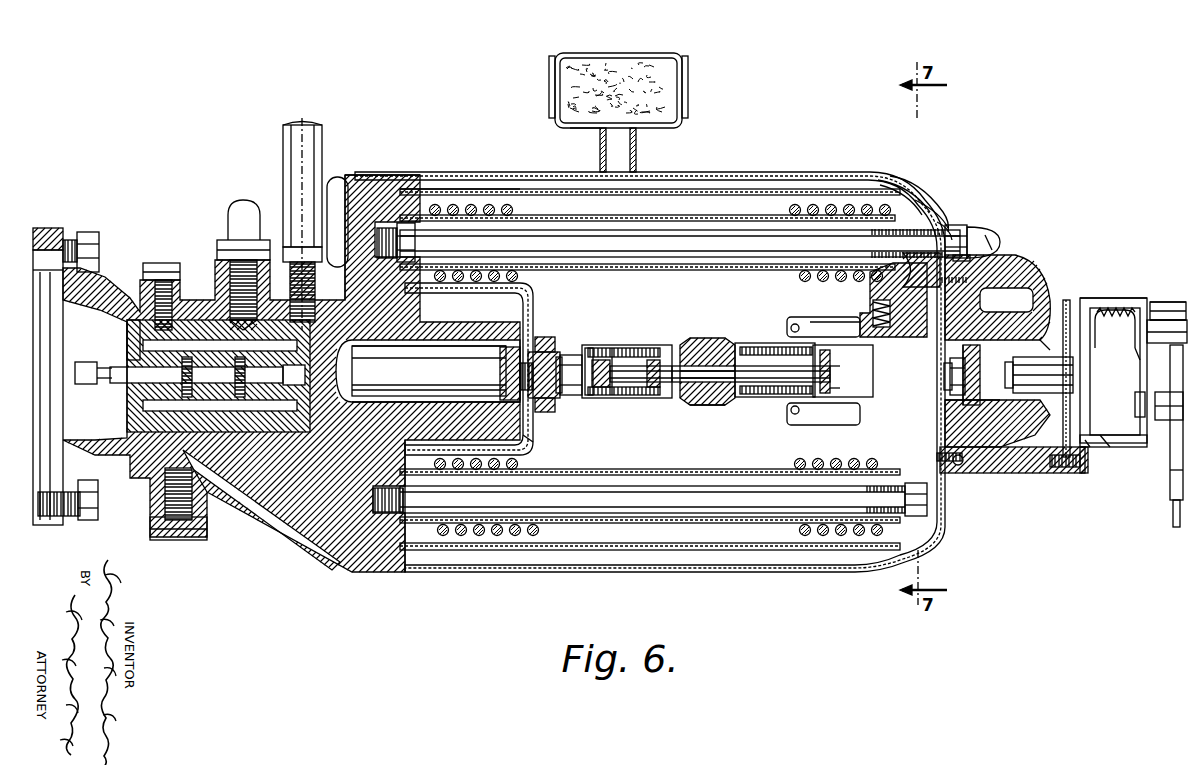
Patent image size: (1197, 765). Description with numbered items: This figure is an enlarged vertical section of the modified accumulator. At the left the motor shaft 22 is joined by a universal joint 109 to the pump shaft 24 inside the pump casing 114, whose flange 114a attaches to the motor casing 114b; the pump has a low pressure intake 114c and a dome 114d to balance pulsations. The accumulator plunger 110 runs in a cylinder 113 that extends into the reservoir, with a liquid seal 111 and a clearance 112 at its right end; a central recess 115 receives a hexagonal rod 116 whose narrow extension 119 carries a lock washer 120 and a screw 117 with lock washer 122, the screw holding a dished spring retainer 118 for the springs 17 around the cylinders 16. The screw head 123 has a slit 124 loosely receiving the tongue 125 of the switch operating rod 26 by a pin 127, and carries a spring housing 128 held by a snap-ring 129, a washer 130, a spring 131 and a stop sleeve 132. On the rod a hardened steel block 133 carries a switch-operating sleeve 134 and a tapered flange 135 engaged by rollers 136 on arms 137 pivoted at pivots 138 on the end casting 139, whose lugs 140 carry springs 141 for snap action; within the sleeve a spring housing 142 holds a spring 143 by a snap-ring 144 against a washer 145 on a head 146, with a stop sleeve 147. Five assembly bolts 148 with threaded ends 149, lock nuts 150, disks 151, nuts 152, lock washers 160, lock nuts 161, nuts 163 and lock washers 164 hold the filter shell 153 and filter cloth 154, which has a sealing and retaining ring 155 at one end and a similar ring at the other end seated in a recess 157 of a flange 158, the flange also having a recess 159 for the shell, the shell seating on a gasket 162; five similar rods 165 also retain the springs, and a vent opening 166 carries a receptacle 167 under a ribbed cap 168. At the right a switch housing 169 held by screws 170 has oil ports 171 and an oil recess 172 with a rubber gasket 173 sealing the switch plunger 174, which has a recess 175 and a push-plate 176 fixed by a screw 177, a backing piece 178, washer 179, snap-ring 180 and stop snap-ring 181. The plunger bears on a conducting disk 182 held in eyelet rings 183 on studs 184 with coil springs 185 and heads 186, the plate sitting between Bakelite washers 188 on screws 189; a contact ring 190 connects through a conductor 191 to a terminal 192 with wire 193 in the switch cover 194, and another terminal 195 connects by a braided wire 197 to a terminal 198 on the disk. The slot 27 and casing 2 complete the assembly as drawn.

The casing 2 is at (737, 172).
The cylinders 16 is at (645, 230).
The accumulator compression springs 17 is at (497, 206).
The motor shaft 22 is at (110, 380).
The pump shaft 24 is at (157, 345).
The switch operating rod 26 is at (240, 368).
The slot 27 is at (262, 500).
The universal joint 109 is at (165, 370).
The accumulator plunger 110 is at (291, 373).
The liquid seal 111 is at (383, 506).
The clearance 112 is at (416, 342).
The cylinder 113 is at (417, 402).
The pump casing 114 is at (252, 496).
The flange 114a is at (86, 233).
The motor casing 114b is at (48, 230).
The low pressure intake 114c is at (160, 472).
The dome 114d is at (240, 212).
The central recess 115 is at (458, 350).
The hexagonal rod 116 is at (462, 378).
The screw 117 is at (550, 345).
The dished spring retainer 118 is at (535, 292).
The narrow extension 119 is at (530, 430).
The lock washer 120 is at (545, 352).
The lock washer 122 is at (559, 394).
The head 123 is at (585, 350).
The central slit 124 is at (576, 396).
The tongue 125 is at (606, 373).
The pin 127 is at (612, 350).
The spring housing 128 is at (630, 399).
The snap-ring 129 is at (620, 352).
The washer 130 is at (602, 388).
The spring 131 is at (653, 388).
The stop sleeve 132 is at (690, 375).
The hardened steel block 133 is at (698, 340).
The switch-operating sleeve 134 is at (750, 345).
The tapered annular flange 135 is at (700, 405).
The rollers 136 is at (790, 320).
The arms 137 is at (822, 320).
The pivots 138 is at (875, 360).
The end casting 139 is at (950, 226).
The lugs 140 is at (868, 296).
The springs 141 is at (873, 313).
The spring housing 142 is at (830, 356).
The spring 143 is at (778, 406).
The snap-ring 144 is at (830, 390).
The spring retaining washer 145 is at (820, 360).
The head 146 is at (830, 372).
The stop sleeve 147 is at (775, 358).
The assembly bolts 148 is at (773, 210).
The screw-threaded ends 149 is at (393, 240).
The lock nuts 150 is at (369, 237).
The spring-retaining disks 151 is at (902, 190).
The nuts 152 is at (925, 212).
The filter-supporting perforated shell 153 is at (926, 190).
The filter cloth 154 is at (887, 181).
The sealing and retaining ring 155 is at (940, 204).
The recess 157 is at (340, 200).
The flange 158 is at (420, 192).
The recess 159 is at (462, 217).
The lock washers 160 is at (958, 235).
The lock nuts 161 is at (988, 246).
The gasket 162 is at (378, 178).
The nuts 163 is at (995, 240).
The lock washers 164 is at (970, 258).
The screw-threaded rods 165 is at (722, 500).
The vent opening 166 is at (636, 152).
The vented receptacle 167 is at (591, 129).
The ribbed cap 168 is at (620, 56).
The switch housing 169 is at (990, 473).
The screws 170 is at (932, 286).
The oil ports 171 is at (968, 340).
The oil recess 172 is at (990, 320).
The rubber gasket 173 is at (1000, 420).
The switch plunger 174 is at (1073, 378).
The annular oil-carrying recess 175 is at (975, 422).
The push-plate 176 is at (963, 400).
The screw 177 is at (948, 377).
The backing piece 178 is at (1030, 335).
The washer 179 is at (1040, 473).
The snap-ring 180 is at (1064, 405).
The stop snap-ring 181 is at (1040, 374).
The conducting disk 182 is at (1090, 448).
The eyelet shaped rings 183 is at (1108, 298).
The studs 184 is at (1118, 300).
The coil springs 185 is at (1136, 304).
The heads 186 is at (1115, 328).
The Bakelite washers 188 is at (1083, 298).
The screws 189 is at (1083, 475).
The contact ring 190 is at (1082, 418).
The conductor 191 is at (1106, 447).
The terminal 192 is at (1170, 452).
The wire 193 is at (1175, 516).
The switch cover 194 is at (1168, 472).
The terminal 195 is at (1165, 344).
The braided insulated wire 197 is at (1135, 400).
The terminal 198 is at (1132, 360).